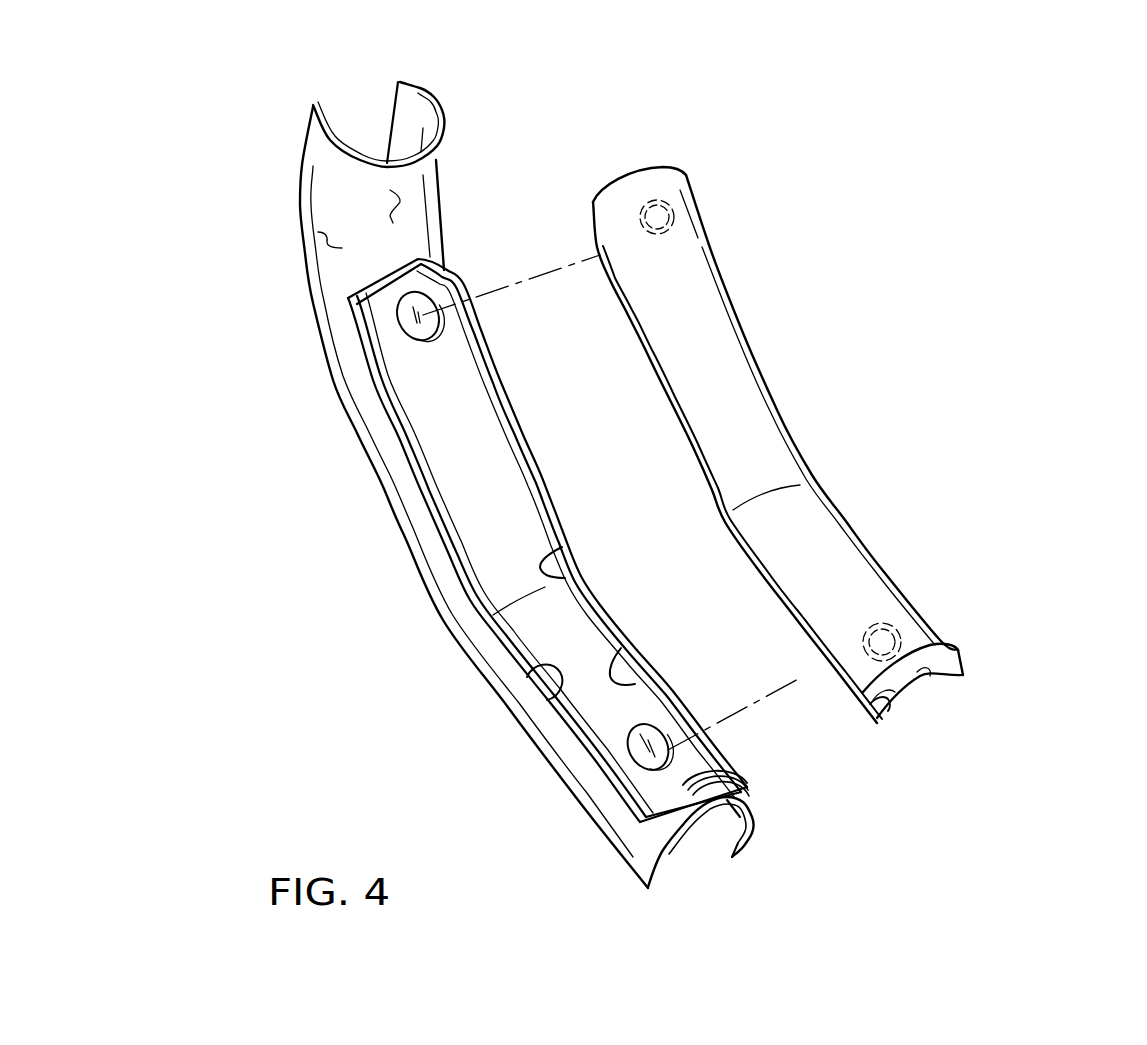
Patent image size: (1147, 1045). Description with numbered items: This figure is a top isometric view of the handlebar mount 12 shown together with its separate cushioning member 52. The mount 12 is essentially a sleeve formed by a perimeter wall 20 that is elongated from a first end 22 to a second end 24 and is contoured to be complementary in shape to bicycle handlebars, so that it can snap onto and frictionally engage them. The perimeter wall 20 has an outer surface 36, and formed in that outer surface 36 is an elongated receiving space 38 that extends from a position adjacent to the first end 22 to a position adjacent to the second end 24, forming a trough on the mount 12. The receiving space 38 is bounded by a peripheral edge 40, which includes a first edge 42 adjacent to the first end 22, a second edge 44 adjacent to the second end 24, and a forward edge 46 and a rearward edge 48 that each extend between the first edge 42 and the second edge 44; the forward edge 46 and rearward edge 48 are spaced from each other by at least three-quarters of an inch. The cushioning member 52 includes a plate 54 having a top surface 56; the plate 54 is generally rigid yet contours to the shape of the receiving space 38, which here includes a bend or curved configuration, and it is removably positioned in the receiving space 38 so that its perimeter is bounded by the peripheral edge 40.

The mount 12 is at (250, 150).
The perimeter wall 20 is at (320, 234).
The first end 22 is at (423, 103).
The second end 24 is at (752, 823).
The outer surface 36 is at (400, 207).
The receiving space 38 is at (450, 467).
The peripheral edge 40 is at (565, 578).
The first edge 42 is at (417, 263).
The second edge 44 is at (667, 773).
The forward edge 46 is at (635, 684).
The rearward edge 48 is at (527, 678).
The cushioning member 52 is at (840, 471).
The plate 54 is at (985, 653).
The top surface 56 is at (885, 705).